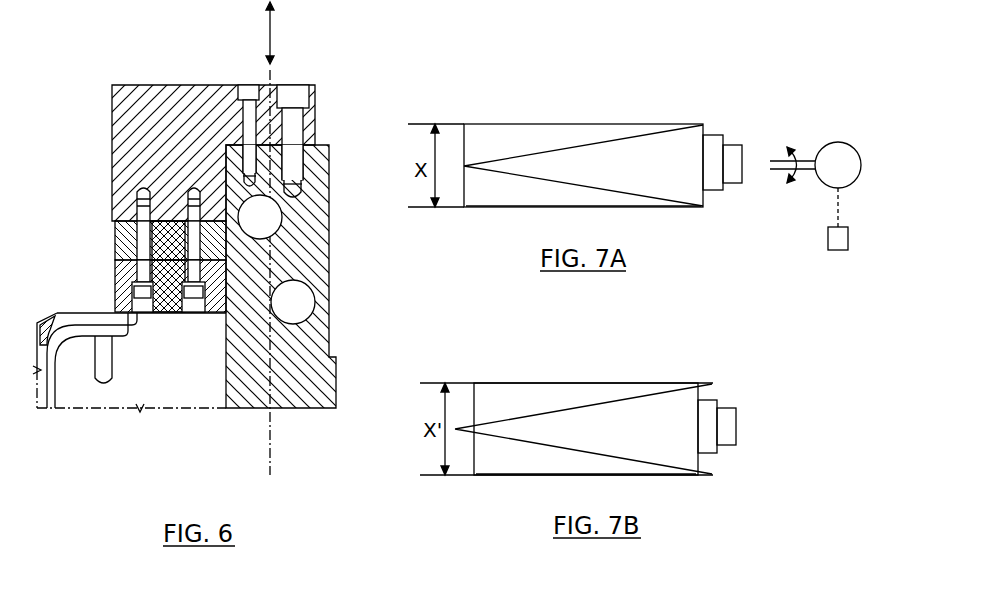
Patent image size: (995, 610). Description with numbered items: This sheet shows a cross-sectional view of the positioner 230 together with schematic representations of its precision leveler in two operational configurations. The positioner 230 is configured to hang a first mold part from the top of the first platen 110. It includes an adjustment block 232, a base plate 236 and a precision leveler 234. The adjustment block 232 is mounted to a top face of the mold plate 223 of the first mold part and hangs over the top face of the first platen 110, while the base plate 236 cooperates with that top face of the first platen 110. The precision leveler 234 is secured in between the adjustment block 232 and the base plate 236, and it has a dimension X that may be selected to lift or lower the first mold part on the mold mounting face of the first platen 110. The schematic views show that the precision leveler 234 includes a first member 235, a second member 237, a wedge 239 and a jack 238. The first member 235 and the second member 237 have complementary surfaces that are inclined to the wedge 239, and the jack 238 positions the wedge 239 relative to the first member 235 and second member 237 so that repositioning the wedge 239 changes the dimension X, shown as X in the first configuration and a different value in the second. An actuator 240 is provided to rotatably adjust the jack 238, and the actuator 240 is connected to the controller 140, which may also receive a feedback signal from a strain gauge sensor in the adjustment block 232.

In FIG. 6, the positioner 230 is at (190, 257).
In FIG. 6, the adjustment block 232 is at (153, 130).
In FIG. 6, the precision leveler 234 is at (116, 237).
In FIG. 6, the base plate 236 is at (118, 290).
In FIG. 6, the mold plate 223 is at (255, 378).
In FIG. 6, the first platen 110 is at (198, 378).
In FIG. 7A, the second member 237 is at (510, 140).
In FIG. 7B, the second member 237 is at (522, 400).
In FIG. 7A, the wedge 239 is at (580, 170).
In FIG. 7B, the wedge 239 is at (592, 428).
In FIG. 7A, the jack 238 is at (733, 160).
In FIG. 7B, the jack 238 is at (730, 420).
In FIG. 7A, the first member 235 is at (523, 195).
In FIG. 7B, the first member 235 is at (535, 468).
In FIG. 7A, the actuator 240 is at (838, 142).
In FIG. 7A, the controller 140 is at (843, 236).